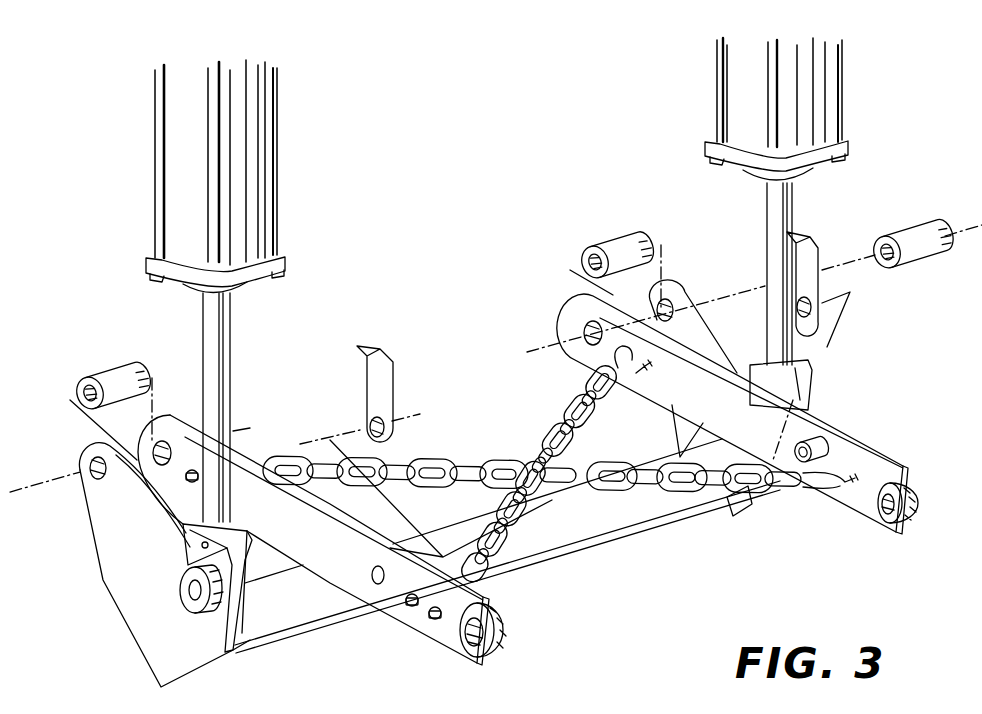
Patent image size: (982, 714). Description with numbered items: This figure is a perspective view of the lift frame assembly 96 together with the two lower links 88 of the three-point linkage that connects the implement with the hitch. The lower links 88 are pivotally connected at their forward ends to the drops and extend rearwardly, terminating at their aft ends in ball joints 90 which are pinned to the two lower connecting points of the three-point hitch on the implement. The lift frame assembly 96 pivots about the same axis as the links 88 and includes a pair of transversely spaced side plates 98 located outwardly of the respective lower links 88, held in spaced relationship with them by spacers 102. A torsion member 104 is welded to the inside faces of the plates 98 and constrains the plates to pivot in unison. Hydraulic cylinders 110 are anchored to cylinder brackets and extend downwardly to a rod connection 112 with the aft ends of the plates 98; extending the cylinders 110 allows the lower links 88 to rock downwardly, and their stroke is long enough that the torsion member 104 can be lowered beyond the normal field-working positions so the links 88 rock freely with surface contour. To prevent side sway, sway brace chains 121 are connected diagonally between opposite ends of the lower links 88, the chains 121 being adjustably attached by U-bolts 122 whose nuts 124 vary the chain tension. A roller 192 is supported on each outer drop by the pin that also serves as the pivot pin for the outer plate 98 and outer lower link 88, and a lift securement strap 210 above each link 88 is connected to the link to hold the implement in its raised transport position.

The lower links 88 is at (328, 552).
The ball joints 90 is at (503, 630).
The lift frame assembly 96 is at (134, 664).
The side plates 98 is at (142, 544).
The spacers 102 is at (122, 363).
The torsion member 104 is at (312, 605).
The hydraulic cylinders 110 is at (262, 158).
The rod connection 112 is at (180, 597).
The sway brace chains 121 is at (443, 457).
The U-bolts 122 is at (642, 368).
The nuts 124 is at (435, 620).
The roller 192 is at (930, 215).
The lift securement strap 210 is at (393, 370).